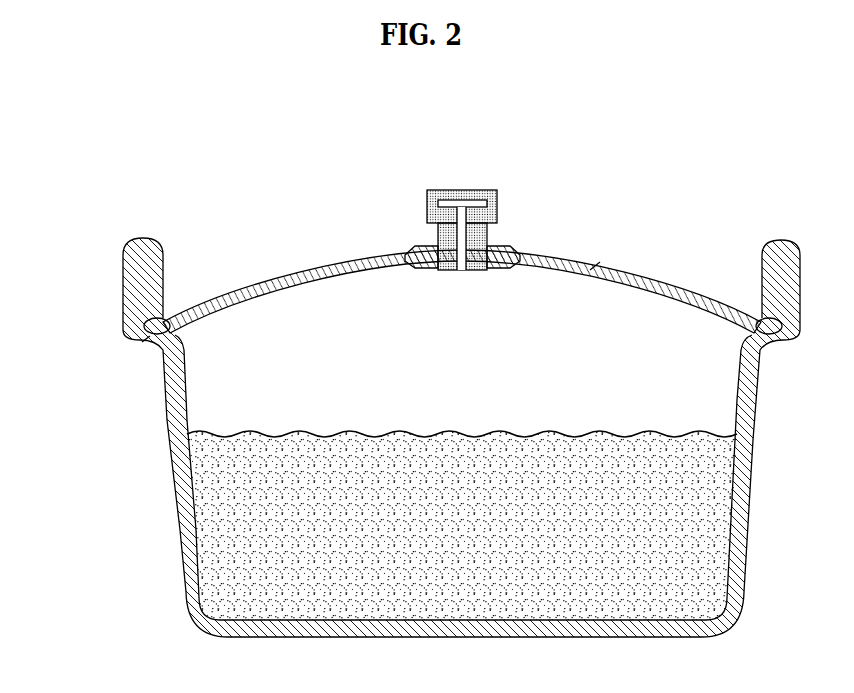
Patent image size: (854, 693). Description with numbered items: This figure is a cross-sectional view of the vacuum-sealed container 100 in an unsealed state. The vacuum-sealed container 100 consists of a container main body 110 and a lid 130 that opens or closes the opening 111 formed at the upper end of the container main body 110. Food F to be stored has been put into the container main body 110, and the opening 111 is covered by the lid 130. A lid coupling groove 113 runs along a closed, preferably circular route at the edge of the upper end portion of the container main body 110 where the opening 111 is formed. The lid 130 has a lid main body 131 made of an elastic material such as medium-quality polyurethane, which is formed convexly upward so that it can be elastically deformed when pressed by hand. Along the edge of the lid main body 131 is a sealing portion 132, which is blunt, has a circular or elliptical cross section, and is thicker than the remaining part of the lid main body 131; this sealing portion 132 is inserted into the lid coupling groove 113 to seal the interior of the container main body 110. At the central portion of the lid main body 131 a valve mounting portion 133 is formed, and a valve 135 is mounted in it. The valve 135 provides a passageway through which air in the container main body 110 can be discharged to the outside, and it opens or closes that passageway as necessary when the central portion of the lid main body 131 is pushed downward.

The vacuum-sealed container 100 is at (700, 166).
The container main body 110 is at (168, 508).
The lid coupling groove 113 is at (146, 322).
The lid 130 is at (290, 258).
The lid main body 131 is at (680, 292).
The opening 111 is at (592, 299).
The sealing portion 132 is at (142, 342).
The valve mounting portion 133 is at (520, 250).
The valve 135 is at (426, 206).
The food F is at (700, 498).